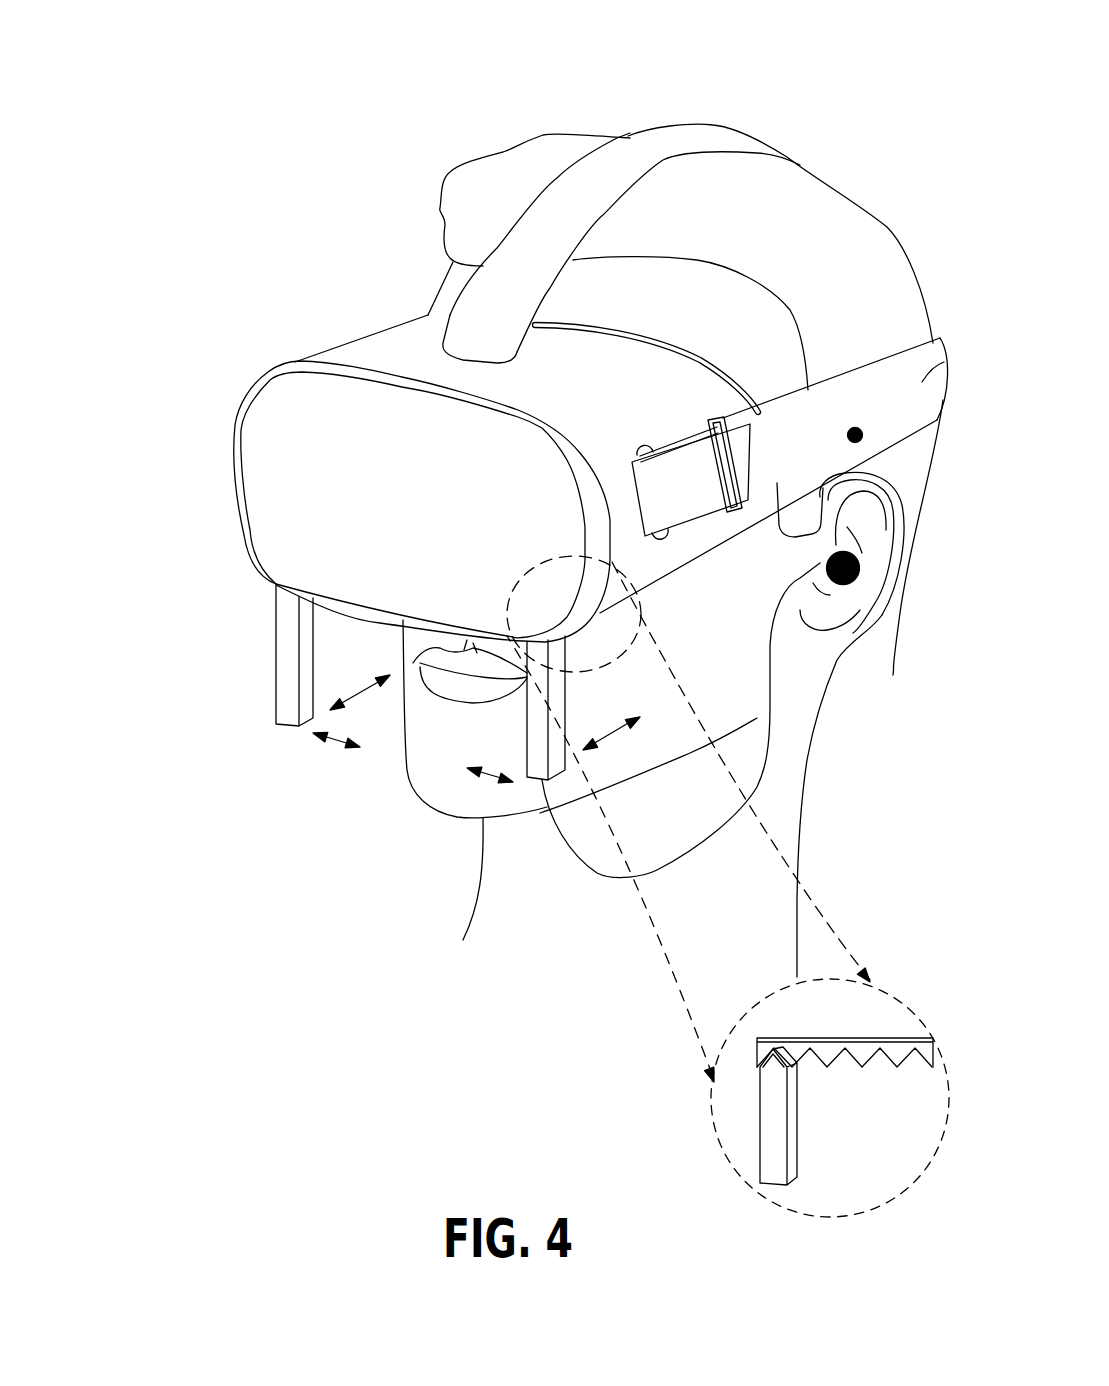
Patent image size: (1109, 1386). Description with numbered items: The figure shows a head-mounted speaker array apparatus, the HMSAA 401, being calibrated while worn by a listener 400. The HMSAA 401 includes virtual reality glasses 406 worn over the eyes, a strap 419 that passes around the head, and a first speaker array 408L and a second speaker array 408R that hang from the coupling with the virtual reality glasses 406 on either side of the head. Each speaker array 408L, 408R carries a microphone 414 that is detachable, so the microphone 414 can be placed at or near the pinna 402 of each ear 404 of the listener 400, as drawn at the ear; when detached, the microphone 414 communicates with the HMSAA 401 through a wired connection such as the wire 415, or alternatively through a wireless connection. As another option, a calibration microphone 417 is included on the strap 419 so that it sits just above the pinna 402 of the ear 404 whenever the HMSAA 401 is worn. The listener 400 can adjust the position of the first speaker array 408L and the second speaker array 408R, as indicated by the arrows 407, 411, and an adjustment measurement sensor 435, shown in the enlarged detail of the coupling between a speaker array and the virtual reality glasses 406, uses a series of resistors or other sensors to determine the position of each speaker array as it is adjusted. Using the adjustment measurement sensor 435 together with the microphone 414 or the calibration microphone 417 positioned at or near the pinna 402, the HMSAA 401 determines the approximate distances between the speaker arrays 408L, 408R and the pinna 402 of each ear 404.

The listener 400 is at (808, 97).
The HMSAA 401 is at (170, 355).
The pinna 402 is at (893, 528).
The ear 404 is at (887, 468).
The virtual reality glasses 406 is at (353, 357).
The arrows 407 is at (360, 690).
The second speaker array 408R is at (276, 645).
The first speaker array 408L is at (553, 723).
The arrows 411 is at (333, 740).
The microphone 414 is at (858, 574).
The wire 415 is at (768, 752).
The calibration microphone 417 is at (855, 435).
The strap 419 is at (947, 352).
The adjustment measurement sensor 435 is at (900, 1040).